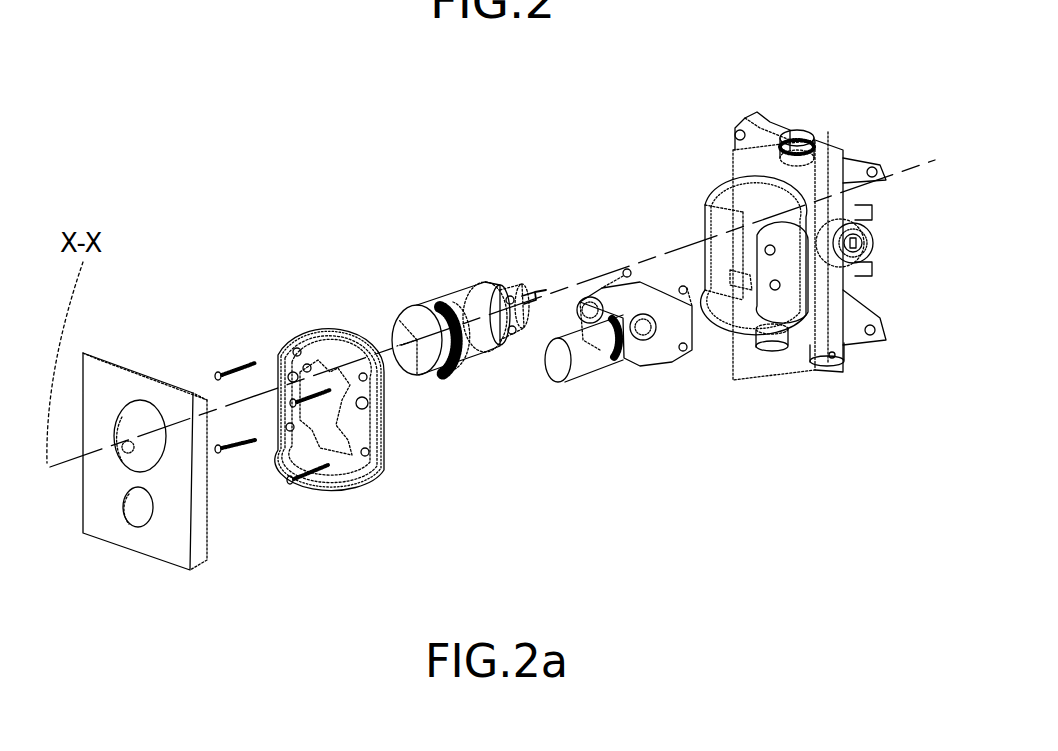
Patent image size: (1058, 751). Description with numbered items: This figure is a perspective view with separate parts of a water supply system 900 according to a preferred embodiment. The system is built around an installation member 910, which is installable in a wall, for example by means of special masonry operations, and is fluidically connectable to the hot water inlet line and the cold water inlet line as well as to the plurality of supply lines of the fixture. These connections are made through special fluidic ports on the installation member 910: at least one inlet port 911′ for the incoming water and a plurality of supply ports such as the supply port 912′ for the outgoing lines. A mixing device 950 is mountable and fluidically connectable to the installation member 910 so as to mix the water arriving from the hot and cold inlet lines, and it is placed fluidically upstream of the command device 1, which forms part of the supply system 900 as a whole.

The water supply system 900 is at (260, 167).
The command device 1 is at (428, 277).
The mixing device 950 is at (595, 392).
The installation member 910 is at (853, 392).
The supply port 912′ is at (880, 248).
The inlet port 911′ is at (827, 372).